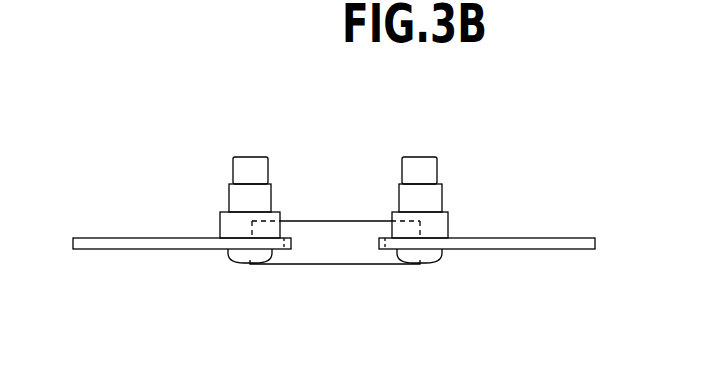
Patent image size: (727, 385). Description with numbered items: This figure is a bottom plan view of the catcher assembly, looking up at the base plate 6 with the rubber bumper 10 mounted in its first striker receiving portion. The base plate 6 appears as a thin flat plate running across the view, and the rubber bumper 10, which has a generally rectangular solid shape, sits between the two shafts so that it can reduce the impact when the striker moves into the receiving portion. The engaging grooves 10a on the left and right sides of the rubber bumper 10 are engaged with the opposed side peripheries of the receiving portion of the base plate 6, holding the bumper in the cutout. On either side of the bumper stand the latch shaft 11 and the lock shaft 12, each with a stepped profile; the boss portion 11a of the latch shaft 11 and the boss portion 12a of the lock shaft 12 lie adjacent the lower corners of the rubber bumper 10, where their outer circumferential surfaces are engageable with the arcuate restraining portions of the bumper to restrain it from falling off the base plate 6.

The base plate 6 is at (98, 238).
The rubber bumper 10 is at (337, 254).
The engaging grooves 10a is at (287, 245).
The latch shaft 11 is at (422, 162).
The boss portion of the latch shaft 11a is at (448, 223).
The lock shaft 12 is at (245, 162).
The boss portion of the lock shaft 12a is at (220, 222).